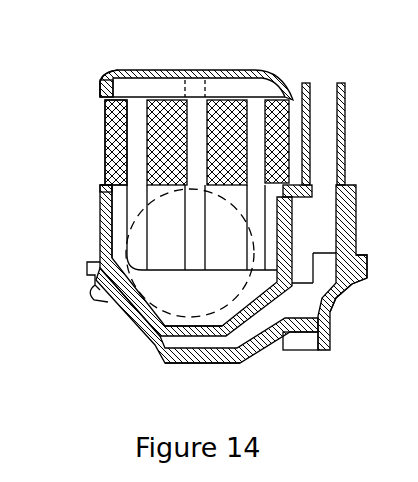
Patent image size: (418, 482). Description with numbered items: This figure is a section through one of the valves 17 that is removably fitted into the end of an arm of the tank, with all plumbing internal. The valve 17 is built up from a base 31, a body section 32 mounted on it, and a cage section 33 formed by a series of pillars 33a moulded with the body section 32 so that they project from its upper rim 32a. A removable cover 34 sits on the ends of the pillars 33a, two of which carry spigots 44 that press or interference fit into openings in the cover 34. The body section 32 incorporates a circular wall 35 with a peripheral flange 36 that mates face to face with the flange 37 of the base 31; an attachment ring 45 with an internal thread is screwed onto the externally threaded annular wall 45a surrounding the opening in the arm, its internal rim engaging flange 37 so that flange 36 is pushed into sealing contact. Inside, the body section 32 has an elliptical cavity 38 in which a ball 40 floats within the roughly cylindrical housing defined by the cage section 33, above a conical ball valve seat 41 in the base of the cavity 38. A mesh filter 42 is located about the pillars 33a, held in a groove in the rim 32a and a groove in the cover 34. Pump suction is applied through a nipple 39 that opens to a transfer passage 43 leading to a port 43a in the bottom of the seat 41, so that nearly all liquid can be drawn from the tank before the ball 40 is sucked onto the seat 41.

The valve 17 is at (90, 99).
The base 31 is at (240, 358).
The body section 32 is at (357, 202).
The upper rim 32a is at (150, 186).
The cage section 33 is at (285, 155).
The pillars 33a is at (132, 140).
The cover 34 is at (253, 72).
The circular wall 35 is at (357, 230).
The peripheral flange 36 is at (369, 263).
The flange 37 is at (358, 277).
The elliptical cavity 38 is at (118, 250).
The nipple 39 is at (316, 93).
The ball 40 is at (130, 227).
The conical ball valve seat 41 is at (175, 290).
The mesh filter 42 is at (108, 115).
The transfer passage 43 is at (292, 308).
The port 43a is at (190, 357).
The spigots 44 is at (200, 66).
The attachment ring 45 is at (102, 96).
The annular wall 45a is at (100, 187).